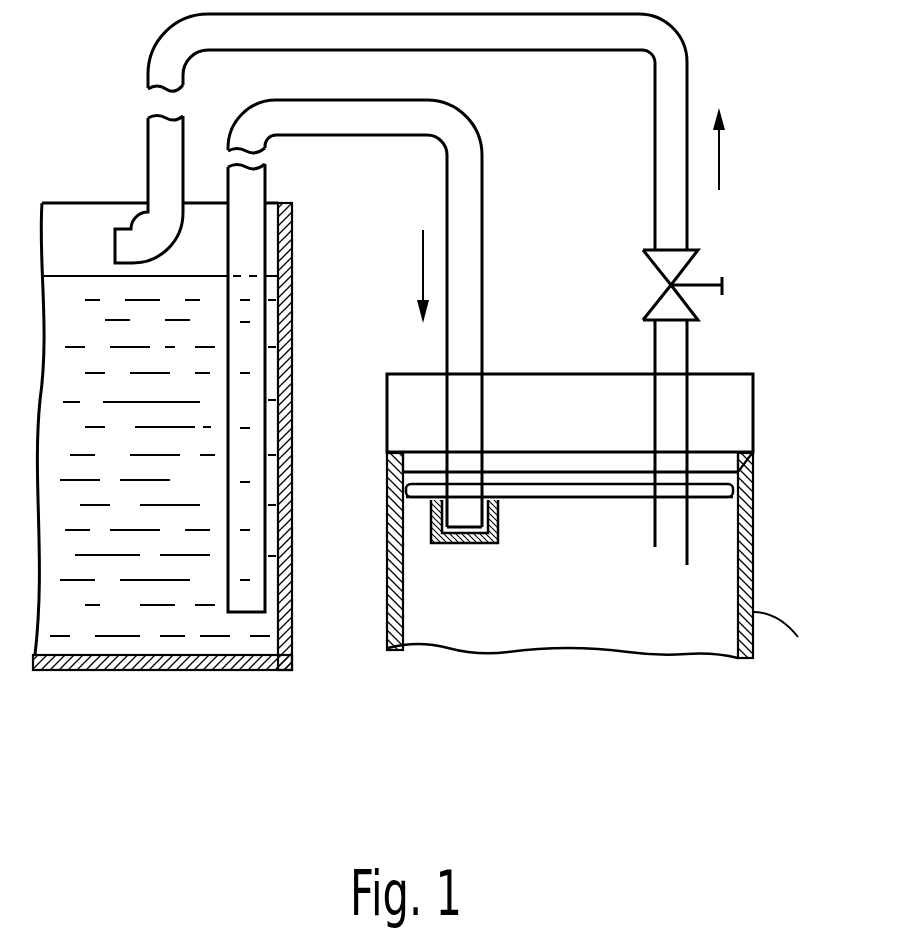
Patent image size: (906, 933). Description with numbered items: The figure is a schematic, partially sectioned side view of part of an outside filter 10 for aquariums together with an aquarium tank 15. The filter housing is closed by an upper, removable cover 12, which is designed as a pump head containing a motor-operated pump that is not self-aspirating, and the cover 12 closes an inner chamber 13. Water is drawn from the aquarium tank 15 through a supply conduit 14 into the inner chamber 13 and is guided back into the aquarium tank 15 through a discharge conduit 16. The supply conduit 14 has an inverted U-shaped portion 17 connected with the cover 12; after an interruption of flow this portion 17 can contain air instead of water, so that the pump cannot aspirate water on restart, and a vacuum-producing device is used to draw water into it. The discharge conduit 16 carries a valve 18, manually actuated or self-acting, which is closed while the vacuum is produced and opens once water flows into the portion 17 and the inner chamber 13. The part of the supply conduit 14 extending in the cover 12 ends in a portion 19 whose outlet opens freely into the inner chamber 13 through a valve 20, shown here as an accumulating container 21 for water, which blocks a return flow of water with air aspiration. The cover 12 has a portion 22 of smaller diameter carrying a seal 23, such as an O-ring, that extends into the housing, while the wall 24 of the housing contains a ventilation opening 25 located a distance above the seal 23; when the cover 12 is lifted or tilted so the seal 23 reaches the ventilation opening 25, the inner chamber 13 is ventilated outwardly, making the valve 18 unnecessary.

The outside filter 10 is at (603, 486).
The cover 12 is at (712, 393).
The inner chamber 13 is at (673, 635).
The supply conduit 14 is at (267, 186).
The aquarium tank 15 is at (241, 668).
The discharge conduit 16 is at (185, 138).
The portion of the supply conduit 17 is at (405, 135).
The valve 18 is at (646, 300).
The portion 19 is at (465, 520).
The valve 20 is at (518, 517).
The accumulating container 21 is at (500, 530).
The portion of smaller diameter 22 is at (522, 462).
The seal 23 is at (413, 478).
The wall 24 is at (745, 555).
The ventilation opening 25 is at (748, 468).